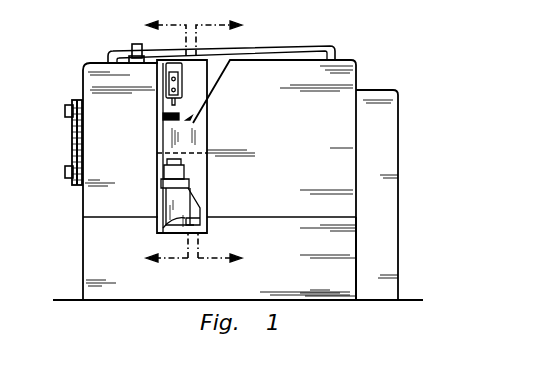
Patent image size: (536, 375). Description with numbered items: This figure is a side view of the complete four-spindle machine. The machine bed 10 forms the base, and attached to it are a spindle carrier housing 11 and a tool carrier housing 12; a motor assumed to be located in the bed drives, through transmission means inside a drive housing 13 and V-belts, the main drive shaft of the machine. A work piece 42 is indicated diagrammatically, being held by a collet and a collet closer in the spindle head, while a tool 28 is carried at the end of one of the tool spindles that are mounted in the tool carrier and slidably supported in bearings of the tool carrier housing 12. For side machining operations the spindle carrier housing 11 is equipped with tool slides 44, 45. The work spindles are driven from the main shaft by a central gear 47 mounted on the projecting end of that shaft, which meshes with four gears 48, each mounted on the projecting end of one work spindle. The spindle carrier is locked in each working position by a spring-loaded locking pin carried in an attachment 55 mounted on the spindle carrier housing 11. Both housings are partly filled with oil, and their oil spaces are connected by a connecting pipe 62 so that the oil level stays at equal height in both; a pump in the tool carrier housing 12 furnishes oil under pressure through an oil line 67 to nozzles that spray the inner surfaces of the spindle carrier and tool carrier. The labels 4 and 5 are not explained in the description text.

The flow direction arrow 4 is at (219, 144).
The flow direction arrow 5 is at (167, 144).
The machine bed 10 is at (93, 262).
The spindle carrier housing 11 is at (96, 202).
The tool carrier housing 12 is at (343, 161).
The drive housing 13 is at (390, 248).
The tool 28 is at (190, 118).
The work piece 42 is at (163, 117).
The tool slide 44 is at (189, 200).
The tool slide 45 is at (182, 69).
The central gear 47 is at (70, 150).
The gear 48 is at (72, 106).
The attachment 55 is at (134, 46).
The connecting pipe 62 is at (161, 220).
The oil line 67 is at (283, 48).